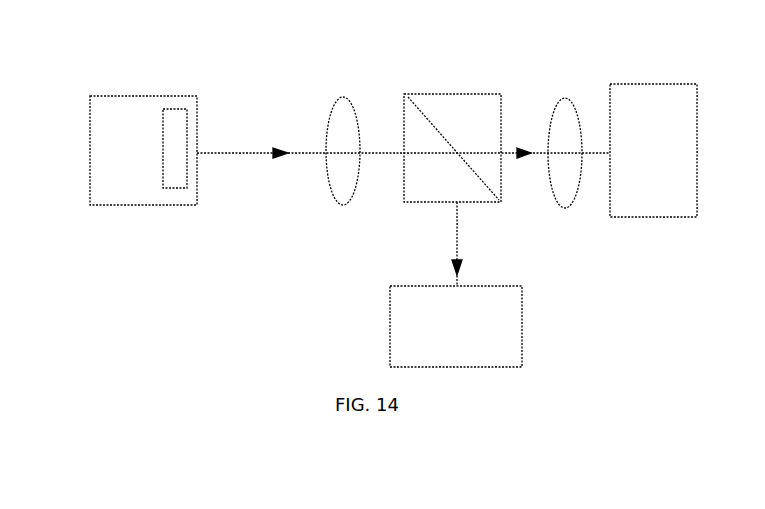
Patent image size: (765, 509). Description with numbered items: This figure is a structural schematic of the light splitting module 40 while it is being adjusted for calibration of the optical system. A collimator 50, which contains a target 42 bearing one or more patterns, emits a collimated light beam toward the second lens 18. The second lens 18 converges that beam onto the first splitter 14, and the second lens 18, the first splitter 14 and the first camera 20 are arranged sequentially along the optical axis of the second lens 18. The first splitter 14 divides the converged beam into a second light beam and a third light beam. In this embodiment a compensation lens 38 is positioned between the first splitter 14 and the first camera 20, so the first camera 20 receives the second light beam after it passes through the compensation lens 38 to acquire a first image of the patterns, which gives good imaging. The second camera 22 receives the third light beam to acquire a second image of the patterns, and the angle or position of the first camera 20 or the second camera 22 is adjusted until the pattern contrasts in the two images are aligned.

The light splitting module 40 is at (310, 29).
The collimator 50 is at (90, 110).
The target 42 is at (165, 115).
The second lens 18 is at (338, 125).
The first splitter 14 is at (408, 112).
The compensation lens 38 is at (560, 112).
The first camera 20 is at (615, 97).
The second camera 22 is at (395, 305).